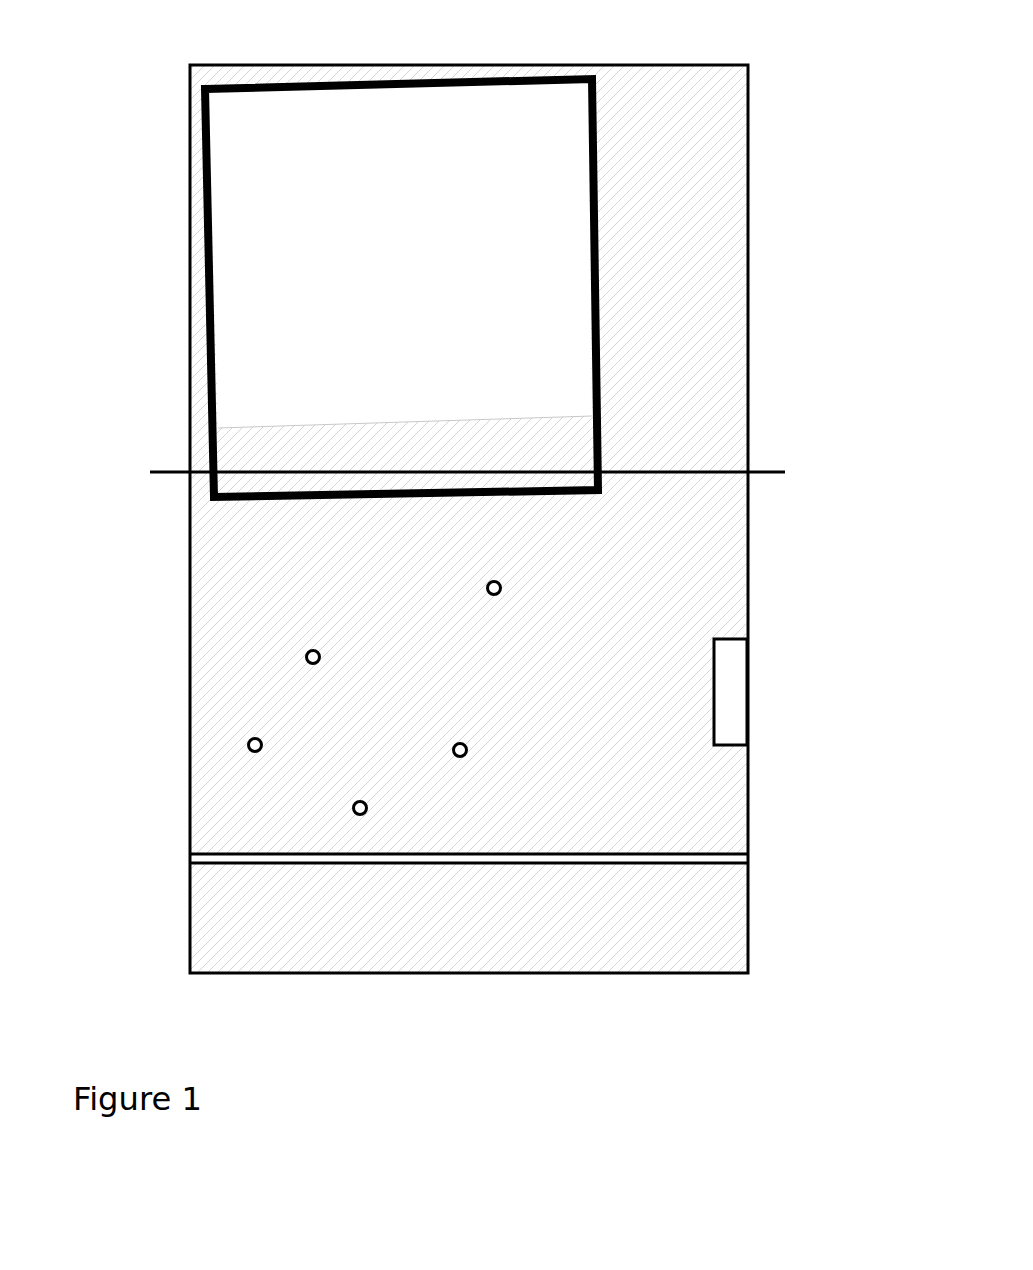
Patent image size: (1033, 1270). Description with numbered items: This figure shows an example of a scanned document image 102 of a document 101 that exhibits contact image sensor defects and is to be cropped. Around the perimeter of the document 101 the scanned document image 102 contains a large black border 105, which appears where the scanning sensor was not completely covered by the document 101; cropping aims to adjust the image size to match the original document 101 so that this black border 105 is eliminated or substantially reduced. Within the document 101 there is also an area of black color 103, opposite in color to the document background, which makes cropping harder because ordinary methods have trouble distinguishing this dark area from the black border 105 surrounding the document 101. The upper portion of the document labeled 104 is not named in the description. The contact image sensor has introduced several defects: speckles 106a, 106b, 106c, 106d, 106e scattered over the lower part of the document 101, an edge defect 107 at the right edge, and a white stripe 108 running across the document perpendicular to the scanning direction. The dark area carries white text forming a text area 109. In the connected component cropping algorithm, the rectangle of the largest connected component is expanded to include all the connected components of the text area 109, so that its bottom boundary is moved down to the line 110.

The document 101 is at (600, 286).
The scanned document image 102 is at (750, 520).
The area of black color 103 is at (272, 457).
The display area 104 is at (412, 242).
The black border 105 is at (698, 150).
The speckle 106a is at (487, 588).
The speckle 106b is at (306, 657).
The speckle 106c is at (453, 750).
The speckle 106d is at (248, 745).
The speckle 106e is at (353, 808).
The edge defect 107 is at (735, 746).
The white stripe 108 is at (470, 864).
The text area 109 is at (527, 452).
The line 110 is at (785, 472).